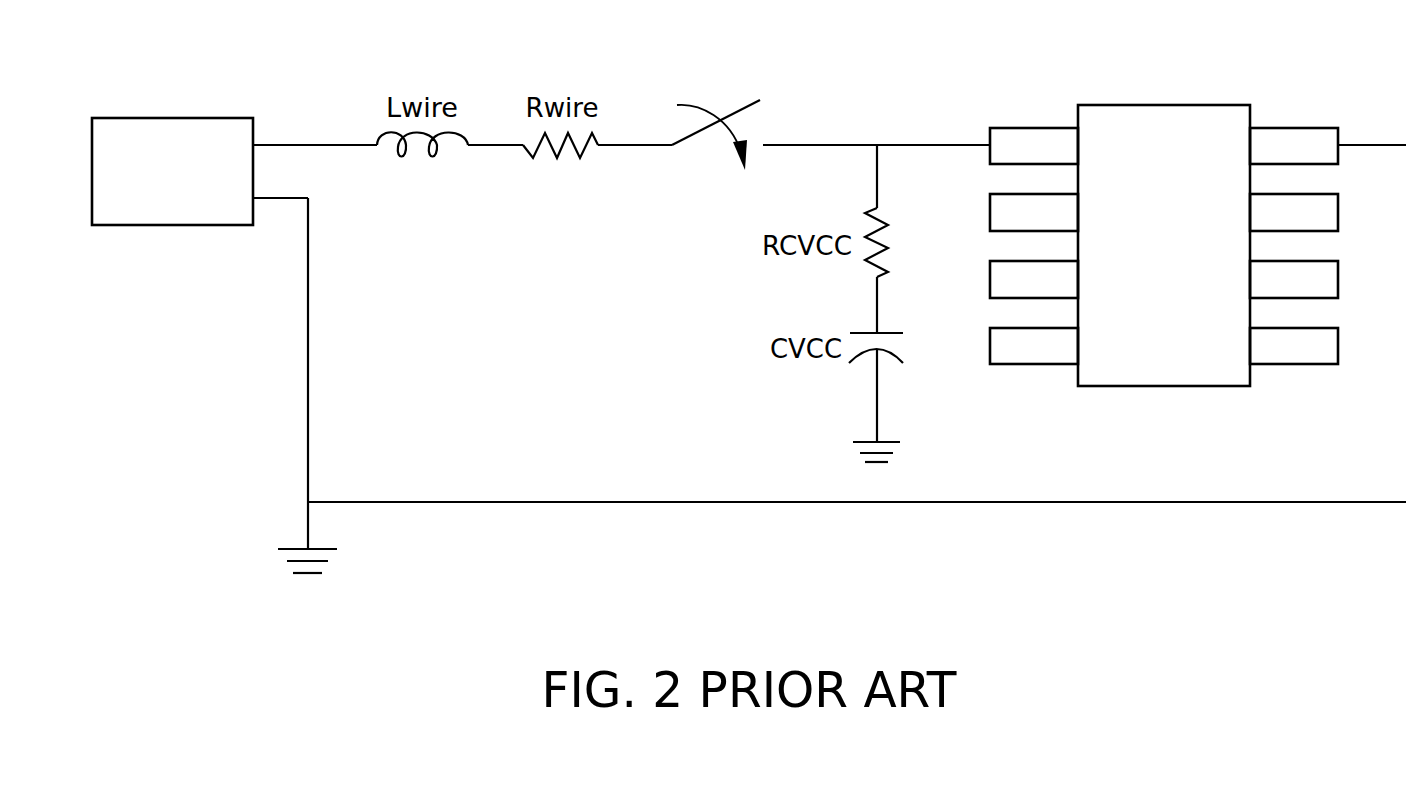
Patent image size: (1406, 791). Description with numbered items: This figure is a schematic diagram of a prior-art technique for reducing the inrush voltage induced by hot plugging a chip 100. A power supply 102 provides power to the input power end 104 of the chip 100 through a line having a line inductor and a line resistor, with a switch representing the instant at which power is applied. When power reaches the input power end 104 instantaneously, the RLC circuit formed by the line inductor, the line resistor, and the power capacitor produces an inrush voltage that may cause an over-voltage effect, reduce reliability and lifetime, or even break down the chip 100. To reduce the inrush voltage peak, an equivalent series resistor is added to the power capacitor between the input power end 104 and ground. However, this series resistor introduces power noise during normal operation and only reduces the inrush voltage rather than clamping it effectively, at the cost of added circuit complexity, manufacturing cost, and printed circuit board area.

The chip 100 is at (1167, 105).
The power supply 102 is at (175, 118).
The input power end 104 is at (1028, 128).